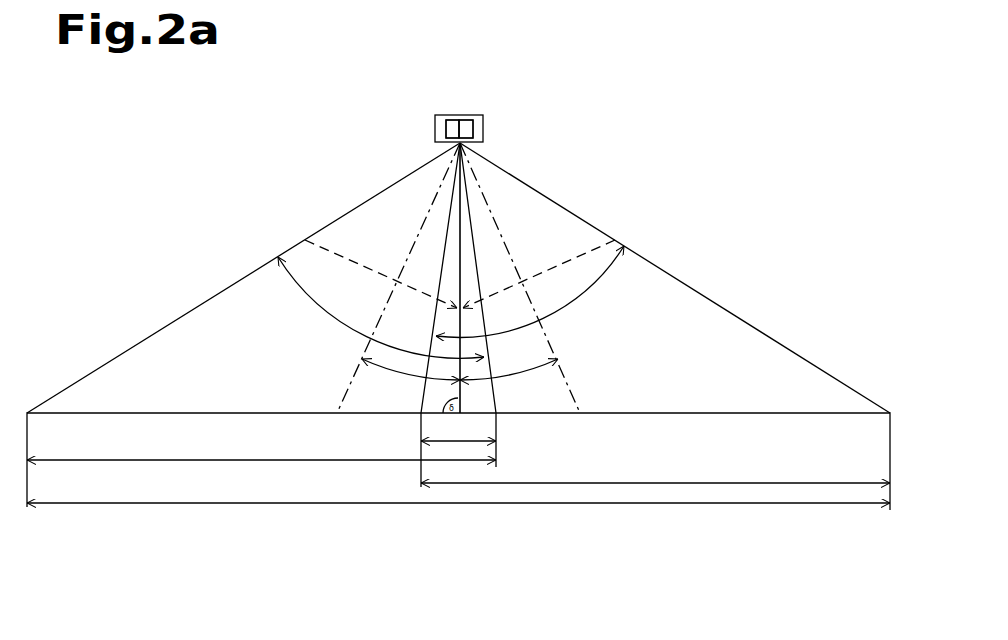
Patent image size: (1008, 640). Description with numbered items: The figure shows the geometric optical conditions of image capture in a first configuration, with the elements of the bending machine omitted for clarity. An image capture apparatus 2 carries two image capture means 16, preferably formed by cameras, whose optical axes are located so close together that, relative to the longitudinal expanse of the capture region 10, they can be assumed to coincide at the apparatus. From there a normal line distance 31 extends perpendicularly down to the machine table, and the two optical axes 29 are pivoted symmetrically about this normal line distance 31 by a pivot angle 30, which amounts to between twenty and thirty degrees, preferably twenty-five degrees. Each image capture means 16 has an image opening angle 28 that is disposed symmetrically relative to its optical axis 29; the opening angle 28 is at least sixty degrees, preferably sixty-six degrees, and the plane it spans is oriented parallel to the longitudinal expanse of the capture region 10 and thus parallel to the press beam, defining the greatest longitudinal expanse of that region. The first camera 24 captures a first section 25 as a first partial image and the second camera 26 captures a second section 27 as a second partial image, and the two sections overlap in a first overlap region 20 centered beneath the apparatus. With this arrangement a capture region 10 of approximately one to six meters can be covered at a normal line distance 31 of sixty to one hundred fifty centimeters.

The image capture apparatus 2 is at (490, 118).
The capture region 10 is at (592, 506).
The image capture means 16 is at (447, 121).
The first overlap region 20 is at (465, 445).
The first camera 24 is at (462, 131).
The first section 25 is at (677, 486).
The second camera 26 is at (452, 132).
The second section 27 is at (265, 462).
The image opening angle 28 is at (312, 306).
The optical axis 29 is at (348, 390).
The pivot angle 30 is at (394, 372).
The normal line distance 31 is at (462, 272).